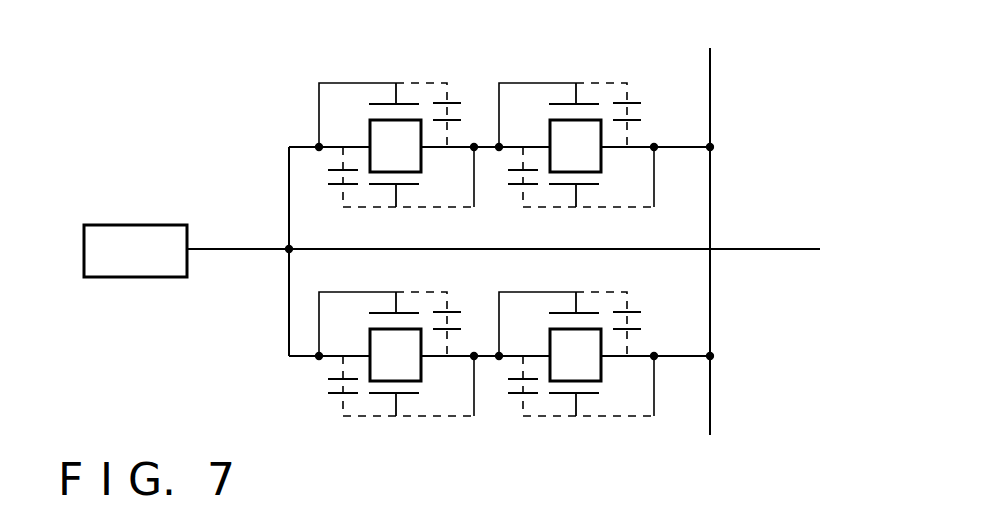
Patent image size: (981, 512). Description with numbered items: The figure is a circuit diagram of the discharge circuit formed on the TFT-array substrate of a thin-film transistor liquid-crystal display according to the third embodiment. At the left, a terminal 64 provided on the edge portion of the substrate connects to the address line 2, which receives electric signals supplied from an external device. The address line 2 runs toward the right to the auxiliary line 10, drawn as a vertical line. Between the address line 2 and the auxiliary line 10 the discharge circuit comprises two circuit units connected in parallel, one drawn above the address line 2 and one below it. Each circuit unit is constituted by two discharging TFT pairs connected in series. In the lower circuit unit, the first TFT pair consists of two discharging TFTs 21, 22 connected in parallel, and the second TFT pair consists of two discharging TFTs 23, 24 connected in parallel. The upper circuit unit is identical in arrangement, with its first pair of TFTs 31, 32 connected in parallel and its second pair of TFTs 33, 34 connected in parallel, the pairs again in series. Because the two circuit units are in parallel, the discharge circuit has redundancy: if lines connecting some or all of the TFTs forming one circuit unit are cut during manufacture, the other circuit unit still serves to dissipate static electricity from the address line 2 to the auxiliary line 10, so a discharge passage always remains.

The address line 2 is at (773, 252).
The auxiliary line 10 is at (710, 198).
The terminal 64 is at (146, 225).
The discharging TFT 21 is at (392, 285).
The discharging TFT 22 is at (403, 430).
The discharging TFT 23 is at (574, 285).
The discharging TFT 24 is at (584, 430).
The transistor 31 is at (392, 66).
The transistor 32 is at (394, 213).
The transistor 33 is at (574, 66).
The transistor 34 is at (574, 213).